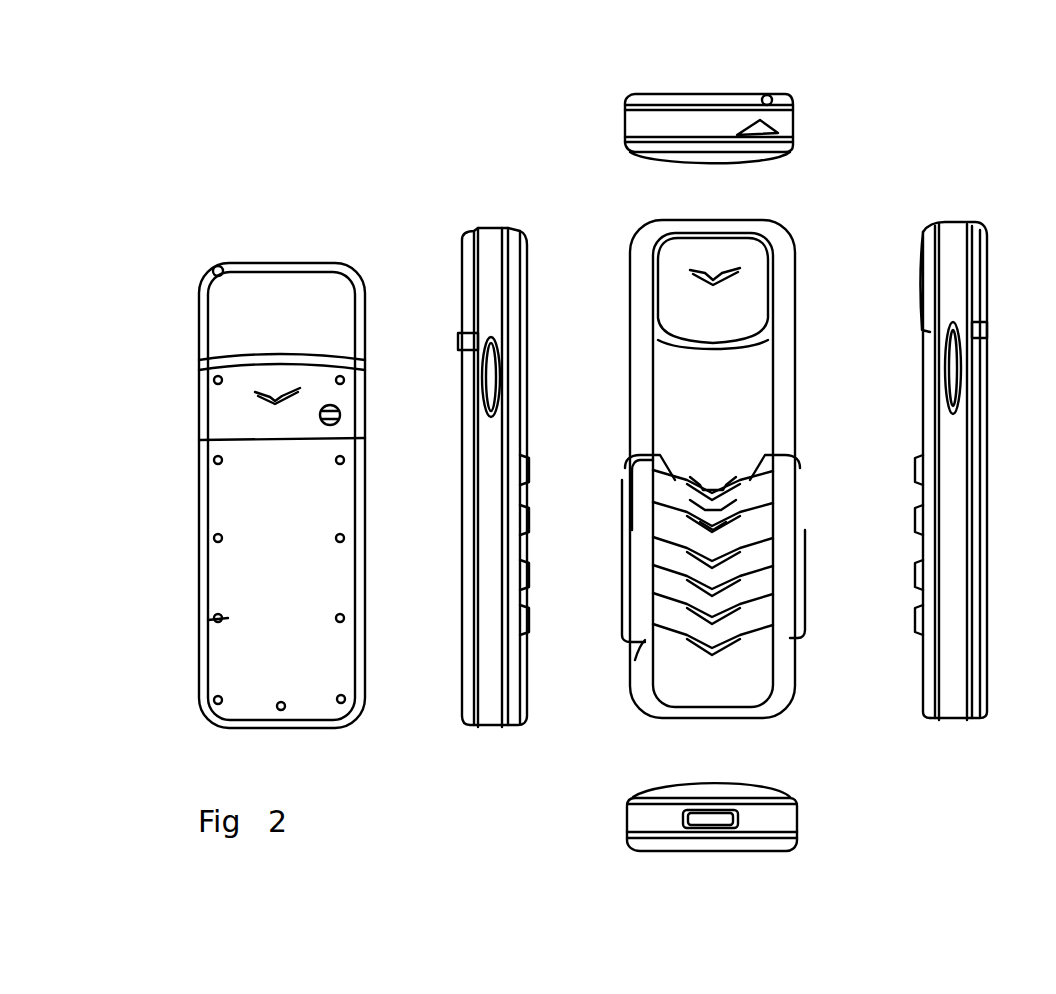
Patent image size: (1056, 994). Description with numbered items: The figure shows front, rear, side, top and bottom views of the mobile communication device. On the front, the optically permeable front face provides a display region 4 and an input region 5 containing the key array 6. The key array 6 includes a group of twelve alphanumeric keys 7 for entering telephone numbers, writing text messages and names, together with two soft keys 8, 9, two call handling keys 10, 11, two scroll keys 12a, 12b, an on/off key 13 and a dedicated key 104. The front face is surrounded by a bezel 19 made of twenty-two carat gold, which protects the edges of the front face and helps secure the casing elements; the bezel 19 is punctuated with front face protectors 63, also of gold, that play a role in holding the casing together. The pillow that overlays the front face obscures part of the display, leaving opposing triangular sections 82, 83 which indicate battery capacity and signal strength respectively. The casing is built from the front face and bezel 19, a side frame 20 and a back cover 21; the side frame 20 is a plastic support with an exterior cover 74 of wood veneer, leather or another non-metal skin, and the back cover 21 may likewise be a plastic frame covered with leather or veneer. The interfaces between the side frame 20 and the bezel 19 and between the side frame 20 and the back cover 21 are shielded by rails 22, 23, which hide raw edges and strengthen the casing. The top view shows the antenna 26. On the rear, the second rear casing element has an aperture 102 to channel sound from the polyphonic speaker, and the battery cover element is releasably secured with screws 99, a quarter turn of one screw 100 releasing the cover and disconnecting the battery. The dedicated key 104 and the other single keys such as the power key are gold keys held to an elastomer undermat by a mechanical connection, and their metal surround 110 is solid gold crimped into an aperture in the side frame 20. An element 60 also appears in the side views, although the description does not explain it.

The display region 4 is at (720, 410).
The input region 5 is at (713, 511).
The key array 6 is at (620, 561).
The alphanumeric keys 7 is at (808, 584).
The soft key 8 is at (640, 470).
The soft key 9 is at (770, 450).
The call handling key 10 is at (660, 525).
The call handling key 11 is at (745, 505).
The scroll key 12a is at (735, 485).
The scroll key 12b is at (745, 522).
The on/off key 13 is at (640, 665).
The bezel 19 is at (500, 402).
The side frame 20 is at (490, 710).
The back cover 21 is at (228, 495).
The rail 22 is at (502, 228).
The rail 23 is at (470, 229).
The antenna 26 is at (219, 268).
The ledge 60 is at (746, 152).
The front face protectors 63 is at (530, 470).
The exterior cover 74 is at (722, 427).
The triangular section 82 is at (760, 335).
The triangular section 83 is at (672, 350).
The screws 99 is at (217, 620).
The screw 100 is at (340, 412).
The aperture 102 is at (282, 532).
The dedicated key 104 is at (957, 365).
The metal surround 110 is at (492, 340).